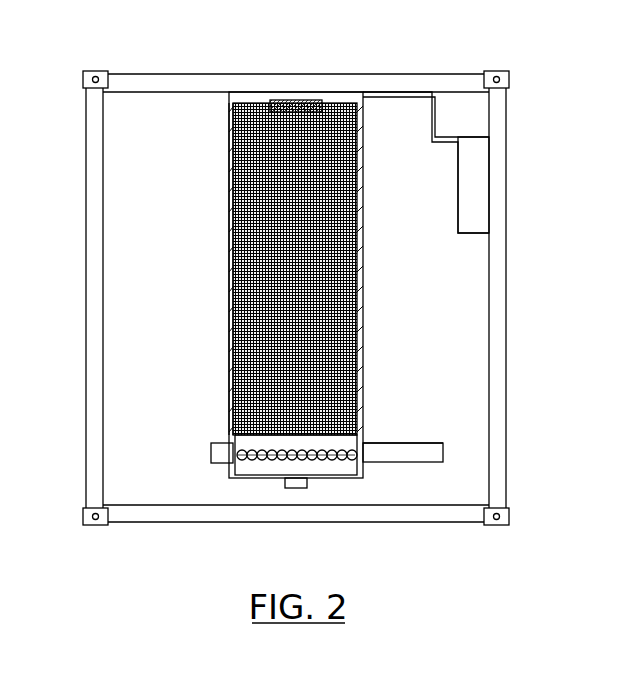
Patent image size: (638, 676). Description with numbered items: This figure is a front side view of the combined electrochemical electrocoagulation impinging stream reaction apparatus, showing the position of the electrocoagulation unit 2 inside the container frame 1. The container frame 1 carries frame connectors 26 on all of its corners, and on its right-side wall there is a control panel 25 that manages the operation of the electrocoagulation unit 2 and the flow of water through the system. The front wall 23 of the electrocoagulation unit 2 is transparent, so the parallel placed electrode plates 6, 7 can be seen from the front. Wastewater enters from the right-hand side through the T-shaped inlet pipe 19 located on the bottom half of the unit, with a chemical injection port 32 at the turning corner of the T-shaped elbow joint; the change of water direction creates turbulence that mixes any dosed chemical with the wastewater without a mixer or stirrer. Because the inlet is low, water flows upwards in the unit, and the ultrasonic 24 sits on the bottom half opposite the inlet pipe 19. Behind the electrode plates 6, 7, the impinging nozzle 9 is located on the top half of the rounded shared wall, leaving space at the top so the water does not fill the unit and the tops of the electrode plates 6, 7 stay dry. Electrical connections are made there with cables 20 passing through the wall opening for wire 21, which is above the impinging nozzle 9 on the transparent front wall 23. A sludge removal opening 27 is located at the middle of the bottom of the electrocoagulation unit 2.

The container frame 1 is at (497, 341).
The electrocoagulation unit 2 is at (267, 475).
The electrode plate 6 is at (232, 233).
The electrode plate 7 is at (232, 270).
The impinging nozzle 9 is at (230, 133).
The inlet pipe 19 is at (373, 455).
The cables 20 is at (440, 113).
The wall opening for wire 21 is at (293, 100).
The front wall 23 is at (232, 288).
The ultrasonic 24 is at (218, 453).
The control panel 25 is at (477, 173).
The frame connectors 26 is at (506, 521).
The sludge removal opening 27 is at (297, 484).
The chemical injection port 32 is at (425, 443).